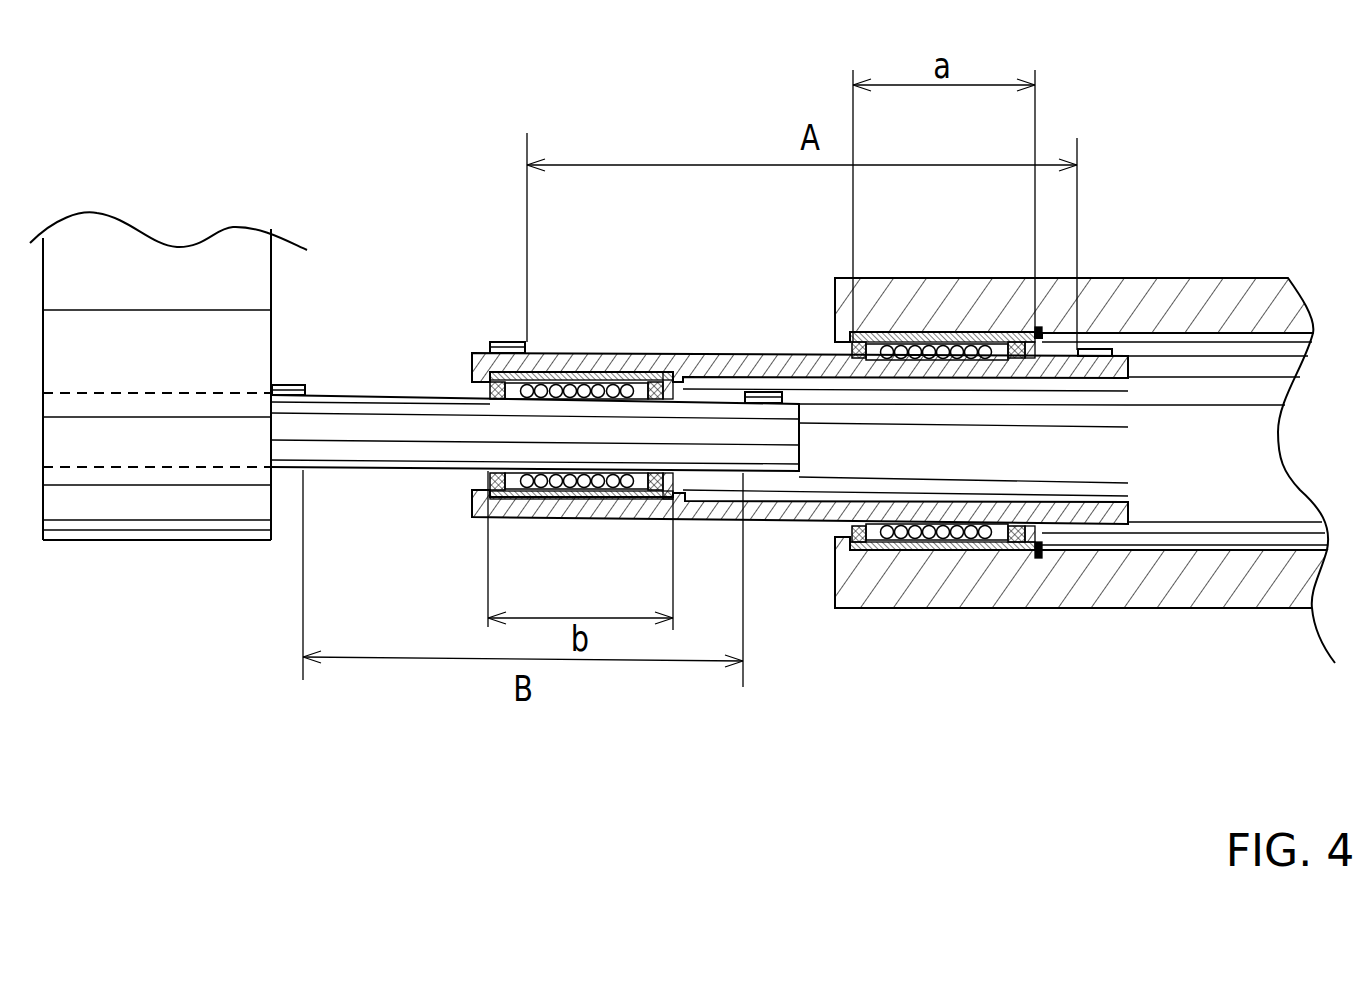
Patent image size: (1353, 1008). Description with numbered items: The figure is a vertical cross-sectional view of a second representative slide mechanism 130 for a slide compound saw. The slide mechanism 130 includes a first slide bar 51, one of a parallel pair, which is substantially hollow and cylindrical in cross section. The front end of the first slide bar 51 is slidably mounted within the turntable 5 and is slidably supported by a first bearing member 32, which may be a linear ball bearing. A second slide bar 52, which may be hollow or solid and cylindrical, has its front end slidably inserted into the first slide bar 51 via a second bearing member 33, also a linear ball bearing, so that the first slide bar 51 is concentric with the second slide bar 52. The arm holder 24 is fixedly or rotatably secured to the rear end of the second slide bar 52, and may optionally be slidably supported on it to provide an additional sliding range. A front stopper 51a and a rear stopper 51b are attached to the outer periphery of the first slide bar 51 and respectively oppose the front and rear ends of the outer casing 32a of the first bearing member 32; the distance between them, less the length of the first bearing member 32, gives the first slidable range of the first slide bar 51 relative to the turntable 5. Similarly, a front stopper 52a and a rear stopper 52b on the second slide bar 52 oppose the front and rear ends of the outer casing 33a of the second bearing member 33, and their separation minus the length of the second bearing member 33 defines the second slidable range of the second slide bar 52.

The turntable 5 is at (888, 290).
The arm holder 24 is at (178, 541).
The first bearing member 32 is at (945, 332).
The outer casing 32a is at (998, 332).
The second bearing member 33 is at (567, 499).
The outer casing 33a is at (637, 499).
The first slide bar 51 is at (668, 353).
The front stopper 51a is at (1105, 349).
The rear stopper 51b is at (508, 342).
The second slide bar 52 is at (400, 395).
The front stopper 52a is at (762, 392).
The rear stopper 52b is at (298, 385).
The slide mechanism 130 is at (741, 338).